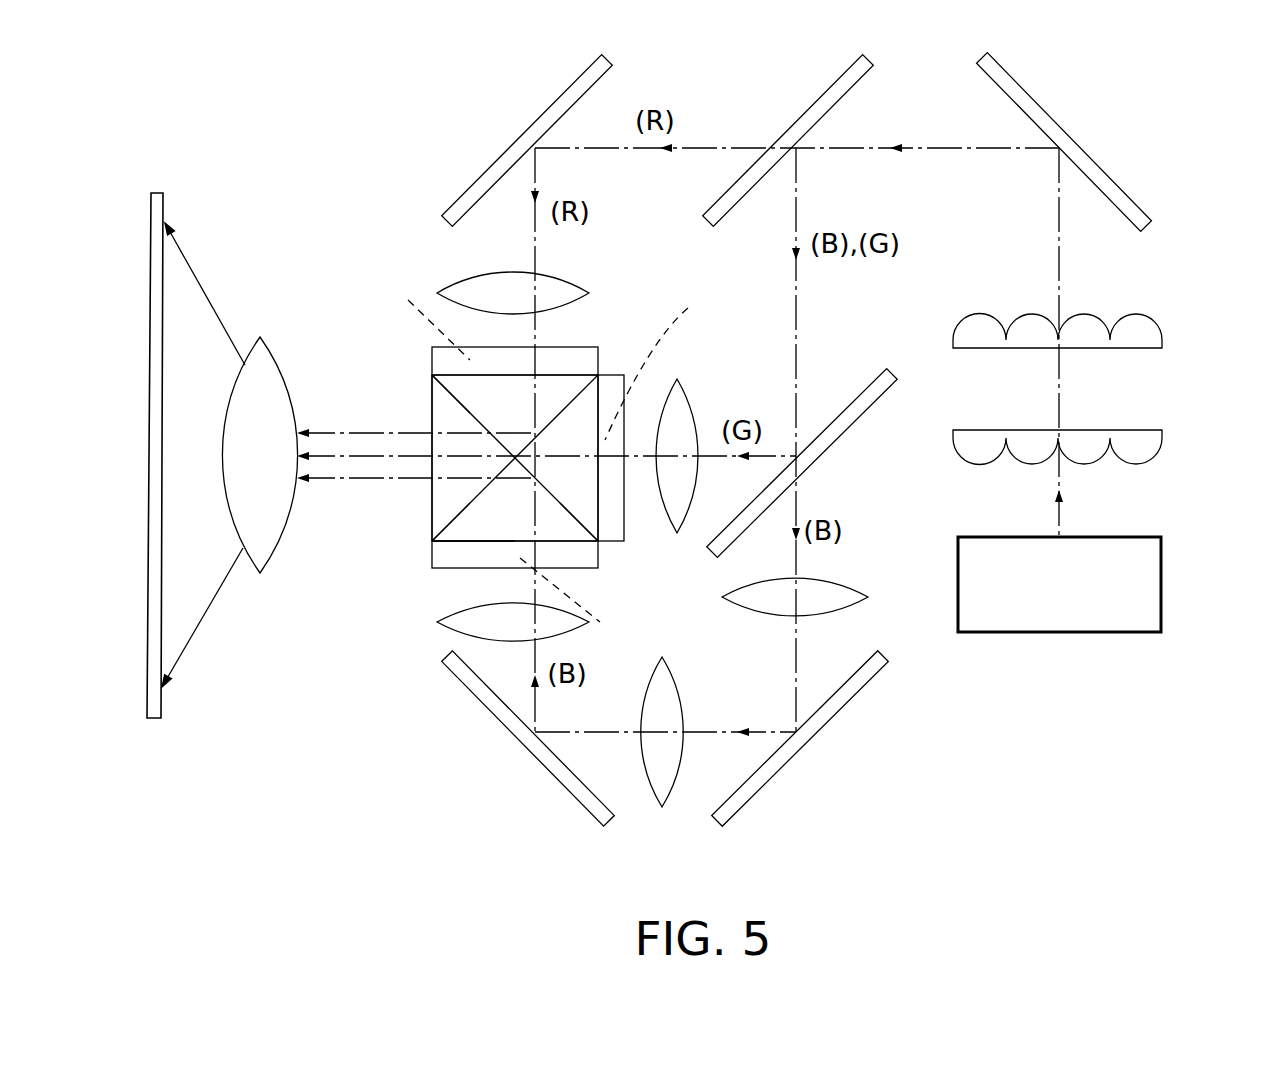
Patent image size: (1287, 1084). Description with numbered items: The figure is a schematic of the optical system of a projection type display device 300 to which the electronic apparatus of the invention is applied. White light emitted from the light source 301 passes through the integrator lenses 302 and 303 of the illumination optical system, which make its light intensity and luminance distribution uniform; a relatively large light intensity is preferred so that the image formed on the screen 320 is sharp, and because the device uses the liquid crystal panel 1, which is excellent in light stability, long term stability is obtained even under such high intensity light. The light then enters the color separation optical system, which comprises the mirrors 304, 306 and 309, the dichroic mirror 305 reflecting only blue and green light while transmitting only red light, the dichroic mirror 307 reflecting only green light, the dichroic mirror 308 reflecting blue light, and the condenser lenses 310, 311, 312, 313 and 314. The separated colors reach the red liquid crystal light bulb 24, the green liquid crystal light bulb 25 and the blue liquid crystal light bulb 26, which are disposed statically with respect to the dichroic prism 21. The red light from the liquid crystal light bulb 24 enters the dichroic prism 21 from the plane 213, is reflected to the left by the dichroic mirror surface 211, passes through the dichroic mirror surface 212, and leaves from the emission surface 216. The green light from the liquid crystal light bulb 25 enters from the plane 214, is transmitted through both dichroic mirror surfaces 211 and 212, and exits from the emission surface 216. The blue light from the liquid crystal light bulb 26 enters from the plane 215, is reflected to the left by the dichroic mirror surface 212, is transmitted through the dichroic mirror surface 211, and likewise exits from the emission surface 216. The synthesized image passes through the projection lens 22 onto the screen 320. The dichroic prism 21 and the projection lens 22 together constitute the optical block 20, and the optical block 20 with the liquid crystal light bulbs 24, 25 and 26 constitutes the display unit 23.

The projection type display device 300 is at (1173, 133).
The light source 301 is at (1162, 602).
The integrator lens 302 is at (1147, 445).
The integrator lens 303 is at (1142, 338).
The mirror 304 is at (1033, 110).
The dichroic mirror 305 is at (815, 110).
The mirror 306 is at (557, 102).
The dichroic mirror 307 is at (847, 408).
The dichroic mirror 308 is at (853, 688).
The mirror 309 is at (495, 712).
The condenser lens 310 is at (456, 282).
The condenser lens 311 is at (683, 412).
The condenser lens 312 is at (833, 588).
The condenser lens 313 is at (668, 782).
The condenser lens 314 is at (452, 625).
The screen 320 is at (162, 718).
The optical block 20 is at (302, 590).
The dichroic prism 21 is at (442, 515).
The projection lens 22 is at (267, 373).
The display unit 23 is at (605, 312).
The liquid crystal light bulb 24 is at (440, 358).
The liquid crystal light bulb 25 is at (614, 395).
The liquid crystal light bulb 26 is at (590, 552).
The dichroic mirror surface 211 is at (446, 508).
The dichroic mirror surface 212 is at (450, 402).
The plane 213 is at (462, 372).
The plane 214 is at (592, 510).
The plane 215 is at (466, 535).
The emission surface 216 is at (436, 428).
The liquid crystal panel 1 is at (548, 463).